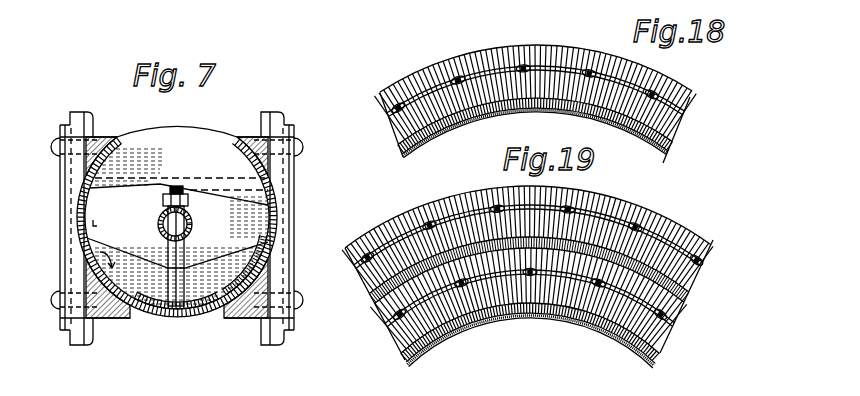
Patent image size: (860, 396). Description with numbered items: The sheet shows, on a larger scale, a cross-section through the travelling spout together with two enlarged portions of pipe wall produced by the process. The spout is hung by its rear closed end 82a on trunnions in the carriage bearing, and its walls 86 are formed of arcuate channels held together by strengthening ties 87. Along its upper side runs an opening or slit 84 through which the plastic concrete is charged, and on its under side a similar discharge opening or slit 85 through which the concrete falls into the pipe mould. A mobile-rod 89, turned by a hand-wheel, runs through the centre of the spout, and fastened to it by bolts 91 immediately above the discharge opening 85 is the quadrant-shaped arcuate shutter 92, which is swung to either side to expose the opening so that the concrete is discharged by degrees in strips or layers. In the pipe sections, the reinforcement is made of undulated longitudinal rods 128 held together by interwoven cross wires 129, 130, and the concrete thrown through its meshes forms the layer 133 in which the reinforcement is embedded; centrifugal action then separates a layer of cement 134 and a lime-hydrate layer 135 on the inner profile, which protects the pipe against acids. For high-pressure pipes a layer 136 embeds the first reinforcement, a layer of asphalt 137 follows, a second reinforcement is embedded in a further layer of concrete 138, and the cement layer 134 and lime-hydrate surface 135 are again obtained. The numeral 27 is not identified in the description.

In FIG. 7, the opening or slit 84 is at (227, 137).
In FIG. 7, the walls of the spout 86 is at (62, 181).
In FIG. 7, the strengthening ties 87 is at (93, 223).
In FIG. 7, the mobile-rod 89 is at (192, 228).
In FIG. 7, the rear closed end of the spout 82a is at (78, 260).
In FIG. 7, the discharge opening or slit 85 is at (186, 330).
In FIG. 7, the bolts 91 is at (218, 318).
In FIG. 7, the arcuate shutter 92 is at (114, 310).
In FIG. 18, the undulated longitudinal rods 128 is at (497, 49).
In FIG. 19, the undulated longitudinal rods 128 is at (590, 203).
In FIG. 18, the interwoven cross wires 129 is at (652, 90).
In FIG. 19, the interwoven cross wires 129 is at (451, 210).
In FIG. 18, the interwoven cross wires 130 is at (662, 100).
In FIG. 19, the interwoven cross wires 130 is at (663, 222).
In FIG. 18, the layer of plastic substance or concrete 133 is at (398, 123).
In FIG. 18, the layer of cement 134 is at (672, 148).
In FIG. 19, the layer of cement 134 is at (671, 344).
In FIG. 18, the layer of lime-hydrate 135 is at (672, 160).
In FIG. 19, the layer of lime-hydrate 135 is at (658, 358).
In FIG. 19, the layer 136 is at (717, 241).
In FIG. 19, the layer of asphalt 137 is at (691, 294).
In FIG. 19, the further layer of concrete 138 is at (699, 299).
In FIG. 19, the partial numeral 27 is at (602, 386).